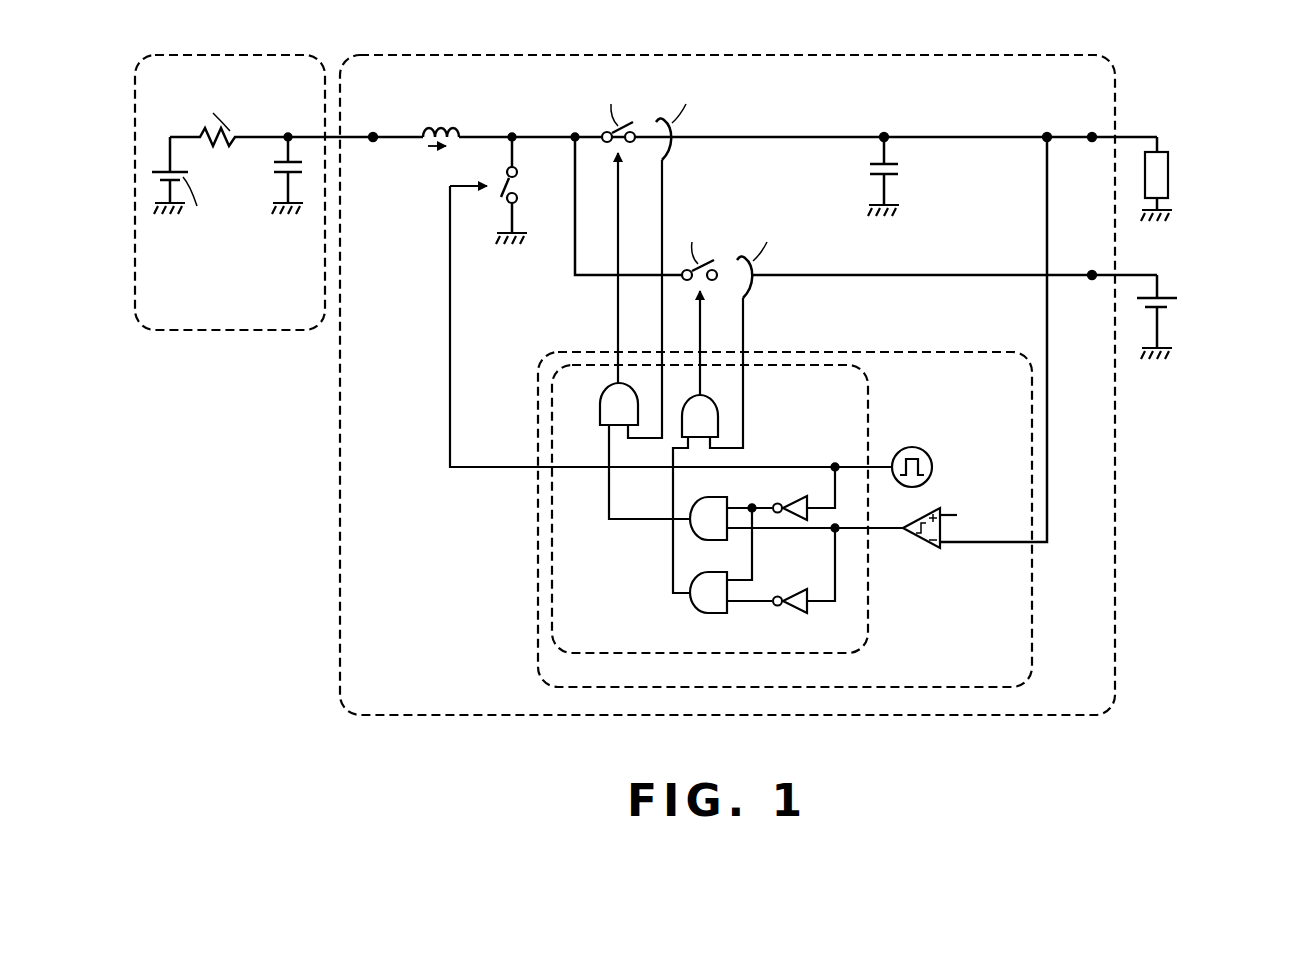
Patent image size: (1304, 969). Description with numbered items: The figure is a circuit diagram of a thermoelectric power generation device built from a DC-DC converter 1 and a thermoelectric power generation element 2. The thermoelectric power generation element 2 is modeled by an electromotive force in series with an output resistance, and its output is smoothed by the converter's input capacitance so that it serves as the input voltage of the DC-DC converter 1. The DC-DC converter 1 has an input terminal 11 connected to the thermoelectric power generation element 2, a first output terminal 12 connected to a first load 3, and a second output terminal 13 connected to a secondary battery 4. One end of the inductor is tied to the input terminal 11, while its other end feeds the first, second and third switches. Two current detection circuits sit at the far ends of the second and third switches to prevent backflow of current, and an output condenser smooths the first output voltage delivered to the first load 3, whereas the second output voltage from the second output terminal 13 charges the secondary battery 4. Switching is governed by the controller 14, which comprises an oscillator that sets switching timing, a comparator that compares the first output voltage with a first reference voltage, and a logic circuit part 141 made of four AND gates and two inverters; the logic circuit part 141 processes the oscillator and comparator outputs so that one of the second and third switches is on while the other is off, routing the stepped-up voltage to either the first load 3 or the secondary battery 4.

The DC-DC converter 1 is at (793, 55).
The thermoelectric power generation element 2 is at (225, 55).
The first load 3 is at (1170, 165).
The secondary battery 4 is at (1173, 303).
The input terminal 11 is at (373, 131).
The first output terminal 12 is at (1092, 131).
The second output terminal 13 is at (1092, 269).
The controller 14 is at (538, 650).
The logic circuit part 141 is at (868, 648).